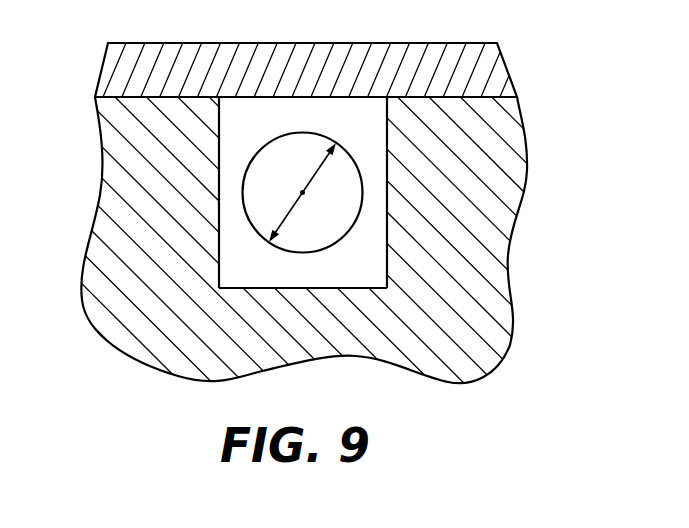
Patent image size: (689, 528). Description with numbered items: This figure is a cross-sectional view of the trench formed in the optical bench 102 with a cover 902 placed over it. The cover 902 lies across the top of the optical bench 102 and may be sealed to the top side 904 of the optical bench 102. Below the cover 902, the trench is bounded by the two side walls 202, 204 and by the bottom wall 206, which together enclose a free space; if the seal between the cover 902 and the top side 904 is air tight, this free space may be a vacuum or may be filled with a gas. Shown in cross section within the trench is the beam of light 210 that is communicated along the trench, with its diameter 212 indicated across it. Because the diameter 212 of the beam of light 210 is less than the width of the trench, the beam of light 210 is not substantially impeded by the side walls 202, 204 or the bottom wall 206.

The optical bench 102 is at (296, 110).
The cover 902 is at (489, 75).
The top side 904 is at (164, 104).
The side wall 202 is at (220, 247).
The side wall 204 is at (386, 129).
The bottom wall 206 is at (322, 288).
The beam of light 210 is at (275, 128).
The diameter 212 is at (321, 164).